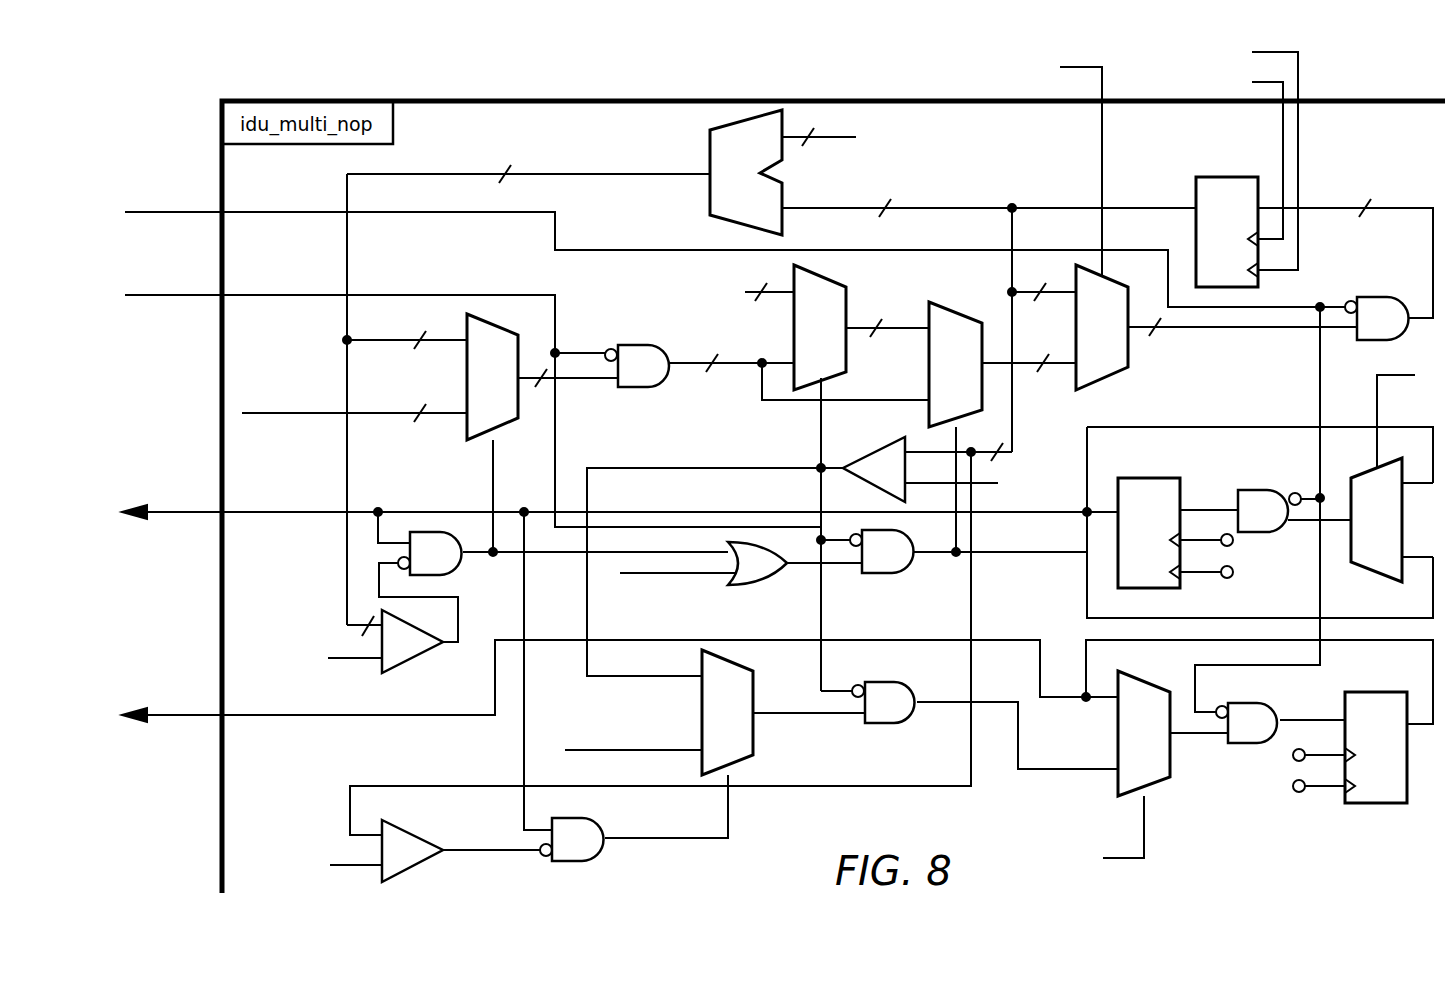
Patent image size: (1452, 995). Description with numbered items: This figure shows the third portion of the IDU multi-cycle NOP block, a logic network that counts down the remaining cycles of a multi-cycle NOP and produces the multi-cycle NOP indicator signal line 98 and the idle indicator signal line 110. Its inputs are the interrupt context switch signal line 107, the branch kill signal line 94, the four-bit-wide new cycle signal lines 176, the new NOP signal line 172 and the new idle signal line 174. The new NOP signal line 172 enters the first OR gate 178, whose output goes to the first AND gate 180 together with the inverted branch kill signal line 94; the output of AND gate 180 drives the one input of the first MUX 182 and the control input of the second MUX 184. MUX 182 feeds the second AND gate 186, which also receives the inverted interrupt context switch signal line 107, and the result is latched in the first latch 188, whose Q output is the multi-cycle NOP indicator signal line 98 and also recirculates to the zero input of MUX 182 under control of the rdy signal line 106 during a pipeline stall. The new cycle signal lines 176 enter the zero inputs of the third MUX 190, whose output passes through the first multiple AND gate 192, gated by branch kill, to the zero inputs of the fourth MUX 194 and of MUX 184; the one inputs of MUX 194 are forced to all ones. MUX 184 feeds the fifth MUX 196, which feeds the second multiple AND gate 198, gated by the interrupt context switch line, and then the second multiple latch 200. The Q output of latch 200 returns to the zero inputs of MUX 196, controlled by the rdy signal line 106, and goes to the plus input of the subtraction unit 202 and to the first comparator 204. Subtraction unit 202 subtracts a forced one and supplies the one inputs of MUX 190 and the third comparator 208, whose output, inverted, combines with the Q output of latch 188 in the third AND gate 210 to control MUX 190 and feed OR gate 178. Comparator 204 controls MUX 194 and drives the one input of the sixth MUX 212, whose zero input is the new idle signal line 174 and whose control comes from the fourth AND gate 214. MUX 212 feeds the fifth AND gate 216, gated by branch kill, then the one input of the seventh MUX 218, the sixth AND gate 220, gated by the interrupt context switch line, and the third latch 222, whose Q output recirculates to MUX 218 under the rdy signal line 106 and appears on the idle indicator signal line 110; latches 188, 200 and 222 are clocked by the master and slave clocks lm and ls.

The interrupt context switch signal line 107 is at (153, 211).
The branch kill signal line 94 is at (170, 300).
The new cycle signal lines 176 is at (287, 418).
The multi-cycle NOP indicator signal line 98 is at (170, 518).
The idle indicator signal line 110 is at (172, 722).
The subtraction unit 202 is at (707, 138).
The rdy signal line 106 is at (1102, 152).
The second multiple latch 200 is at (1228, 176).
The second multiple AND gate 198 is at (1380, 296).
The first multiple AND gate 192 is at (632, 343).
The fourth MUX 194 is at (850, 303).
The second MUX 184 is at (970, 287).
The fifth MUX 196 is at (1134, 355).
The third MUX 190 is at (465, 432).
The first comparator 204 is at (878, 448).
The third comparator 208 is at (428, 668).
The third AND gate 210 is at (458, 570).
The new NOP signal line 172 is at (620, 575).
The first OR gate 178 is at (770, 586).
The first AND gate 180 is at (888, 576).
The first latch 188 is at (1150, 477).
The second AND gate 186 is at (1271, 489).
The first MUX 182 is at (1372, 577).
The new idle signal line 174 is at (578, 748).
The sixth MUX 212 is at (756, 738).
The fifth AND gate 216 is at (888, 725).
The seventh MUX 218 is at (1116, 720).
The sixth AND gate 220 is at (1245, 745).
The third latch 222 is at (1378, 806).
The fourth AND gate 214 is at (598, 858).